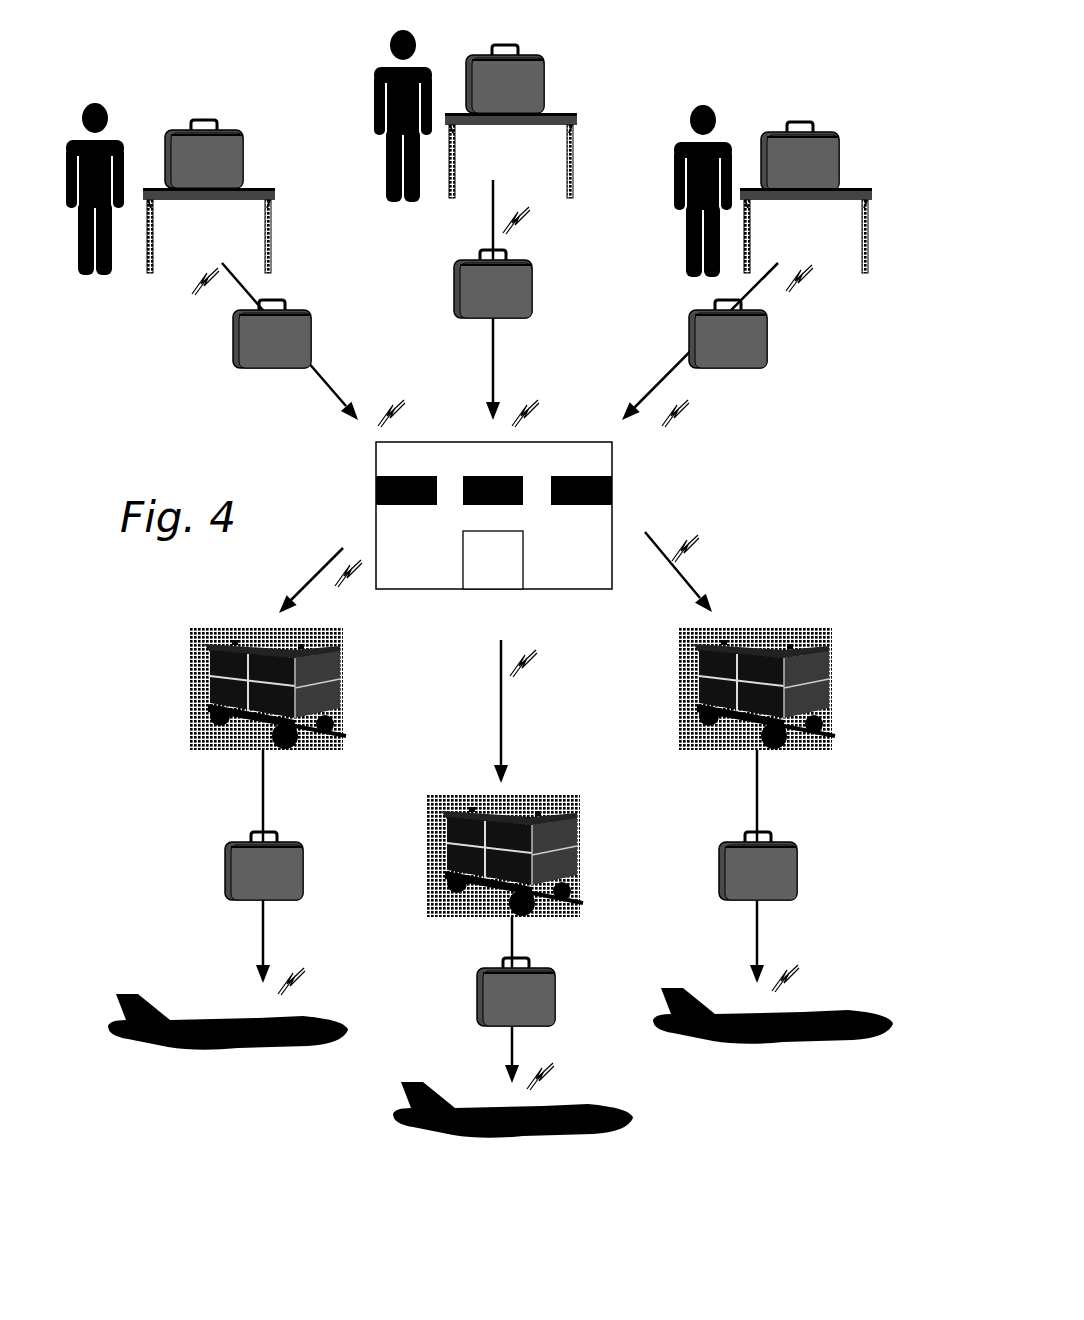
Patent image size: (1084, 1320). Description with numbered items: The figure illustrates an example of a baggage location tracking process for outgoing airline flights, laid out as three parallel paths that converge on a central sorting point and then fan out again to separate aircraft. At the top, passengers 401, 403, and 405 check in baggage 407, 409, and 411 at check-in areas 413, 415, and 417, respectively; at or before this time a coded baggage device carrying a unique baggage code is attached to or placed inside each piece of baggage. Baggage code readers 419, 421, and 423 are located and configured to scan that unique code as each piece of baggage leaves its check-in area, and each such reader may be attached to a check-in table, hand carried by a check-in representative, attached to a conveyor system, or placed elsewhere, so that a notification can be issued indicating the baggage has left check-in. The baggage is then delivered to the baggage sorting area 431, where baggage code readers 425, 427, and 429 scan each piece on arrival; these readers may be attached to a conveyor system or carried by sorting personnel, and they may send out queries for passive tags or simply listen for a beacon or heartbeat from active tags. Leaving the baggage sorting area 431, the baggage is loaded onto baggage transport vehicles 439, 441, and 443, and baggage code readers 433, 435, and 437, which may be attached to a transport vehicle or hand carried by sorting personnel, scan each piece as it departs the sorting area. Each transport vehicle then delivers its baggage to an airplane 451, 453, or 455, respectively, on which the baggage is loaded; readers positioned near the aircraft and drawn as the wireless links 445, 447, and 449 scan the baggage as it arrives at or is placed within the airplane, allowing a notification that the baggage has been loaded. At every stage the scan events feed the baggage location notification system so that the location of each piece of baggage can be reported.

The passenger 401 is at (102, 103).
The passenger 403 is at (398, 29).
The passenger 405 is at (710, 105).
The baggage 407 is at (218, 122).
The baggage 409 is at (520, 47).
The baggage 411 is at (815, 124).
The check-in area 413 is at (272, 220).
The check-in area 415 is at (575, 142).
The check-in area 417 is at (868, 220).
The baggage code reader 419 is at (196, 290).
The baggage code reader 421 is at (524, 226).
The baggage code reader 423 is at (804, 290).
The baggage code reader 425 is at (400, 400).
The baggage code reader 427 is at (536, 400).
The baggage code reader 429 is at (686, 400).
The baggage sorting area 431 is at (468, 442).
The baggage code reader 433 is at (365, 556).
The baggage code reader 435 is at (540, 650).
The baggage code reader 437 is at (700, 535).
The baggage transport vehicle 439 is at (226, 628).
The baggage transport vehicle 441 is at (462, 797).
The baggage transport vehicle 443 is at (797, 628).
The wireless communication link 445 is at (302, 970).
The wireless communication link 447 is at (552, 1066).
The wireless communication link 449 is at (804, 968).
The airplane 451 is at (322, 1020).
The airplane 453 is at (608, 1108).
The airplane 455 is at (866, 1012).